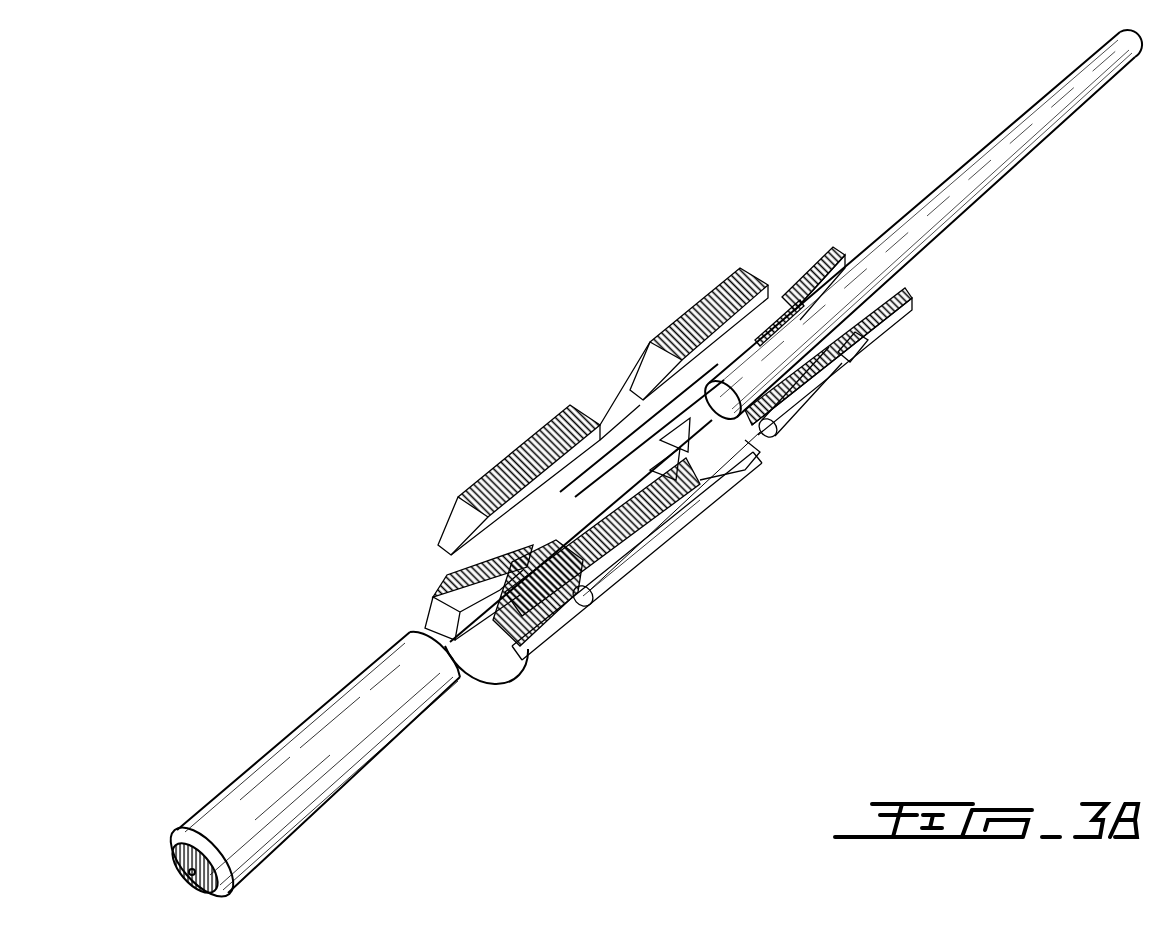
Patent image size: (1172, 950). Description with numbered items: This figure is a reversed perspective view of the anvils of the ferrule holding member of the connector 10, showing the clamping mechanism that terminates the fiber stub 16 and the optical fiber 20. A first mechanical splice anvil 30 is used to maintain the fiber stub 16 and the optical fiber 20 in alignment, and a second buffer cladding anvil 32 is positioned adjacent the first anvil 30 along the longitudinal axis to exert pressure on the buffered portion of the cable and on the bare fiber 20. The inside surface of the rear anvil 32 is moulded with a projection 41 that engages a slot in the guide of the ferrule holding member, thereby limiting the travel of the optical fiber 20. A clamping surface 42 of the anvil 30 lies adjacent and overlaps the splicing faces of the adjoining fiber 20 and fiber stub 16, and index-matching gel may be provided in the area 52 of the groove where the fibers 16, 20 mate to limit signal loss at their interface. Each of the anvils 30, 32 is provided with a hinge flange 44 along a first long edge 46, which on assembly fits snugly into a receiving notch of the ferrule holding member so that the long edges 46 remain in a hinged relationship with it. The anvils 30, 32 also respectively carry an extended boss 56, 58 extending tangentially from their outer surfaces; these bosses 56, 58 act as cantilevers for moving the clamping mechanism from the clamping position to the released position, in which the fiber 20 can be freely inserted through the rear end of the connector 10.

The connector 10 is at (362, 278).
The fiber stub 16 is at (552, 612).
The optical fiber 20 is at (697, 520).
The first mechanical splice anvil 30 is at (630, 457).
The second buffer cladding anvil 32 is at (785, 297).
The projection 41 is at (767, 432).
The clamping surface 42 is at (487, 580).
The hinge flange 44 is at (650, 563).
The first long edge 46 is at (534, 668).
The area 52 is at (527, 575).
The extended boss 56 is at (562, 445).
The extended boss 58 is at (688, 332).